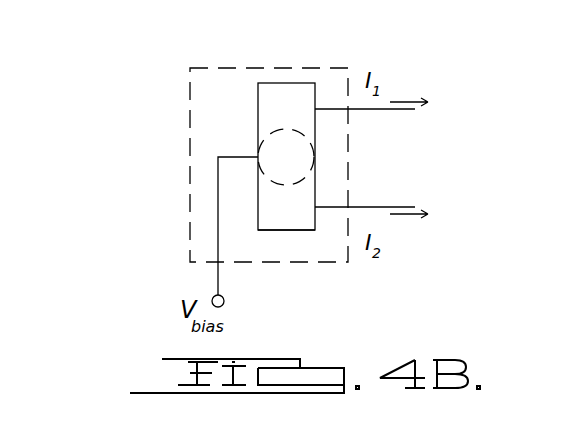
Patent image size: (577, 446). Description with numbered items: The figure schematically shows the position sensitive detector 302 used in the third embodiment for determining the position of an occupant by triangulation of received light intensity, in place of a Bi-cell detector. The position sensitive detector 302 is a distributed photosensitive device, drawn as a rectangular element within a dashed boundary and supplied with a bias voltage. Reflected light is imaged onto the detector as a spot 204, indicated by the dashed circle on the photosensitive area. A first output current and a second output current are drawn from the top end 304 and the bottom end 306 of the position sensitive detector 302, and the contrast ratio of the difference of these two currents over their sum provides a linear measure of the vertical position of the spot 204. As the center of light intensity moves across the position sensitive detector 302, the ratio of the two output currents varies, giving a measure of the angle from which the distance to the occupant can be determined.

The position sensitive detector 302 is at (189, 133).
The top end 304 is at (296, 84).
The light spot 204 is at (311, 175).
The bottom end 306 is at (300, 231).